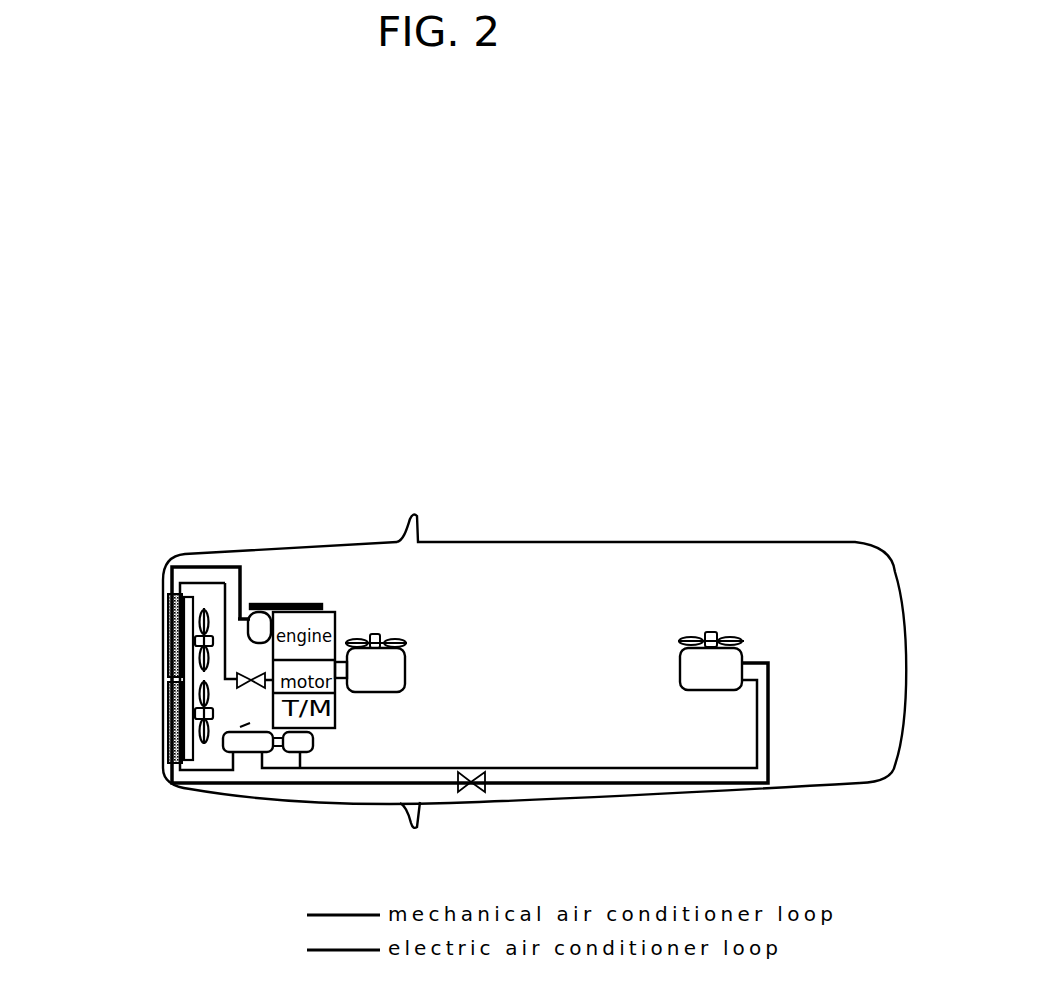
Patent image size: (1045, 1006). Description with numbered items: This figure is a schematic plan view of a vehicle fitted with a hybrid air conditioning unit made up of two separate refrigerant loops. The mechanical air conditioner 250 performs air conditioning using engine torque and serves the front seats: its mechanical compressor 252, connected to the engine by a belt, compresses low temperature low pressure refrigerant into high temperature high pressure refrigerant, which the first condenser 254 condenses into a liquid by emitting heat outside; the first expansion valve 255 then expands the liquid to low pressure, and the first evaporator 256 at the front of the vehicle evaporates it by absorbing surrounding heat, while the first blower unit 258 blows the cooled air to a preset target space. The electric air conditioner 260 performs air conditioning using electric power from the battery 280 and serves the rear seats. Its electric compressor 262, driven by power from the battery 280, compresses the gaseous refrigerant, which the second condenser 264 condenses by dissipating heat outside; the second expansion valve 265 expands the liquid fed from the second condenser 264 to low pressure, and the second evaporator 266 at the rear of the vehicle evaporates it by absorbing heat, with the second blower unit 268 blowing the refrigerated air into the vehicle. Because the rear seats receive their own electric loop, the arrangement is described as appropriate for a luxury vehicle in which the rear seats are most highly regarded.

The mechanical air conditioner 250 is at (192, 567).
The mechanical compressor 252 is at (250, 612).
The first condenser 254 is at (163, 655).
The first expansion valve 255 is at (237, 679).
The first evaporator 256 is at (362, 693).
The first blower unit 258 is at (360, 634).
The electric air conditioner 260 is at (195, 787).
The electric compressor 262 is at (246, 753).
The second condenser 264 is at (163, 704).
The second expansion valve 265 is at (470, 793).
The second evaporator 266 is at (712, 682).
The second blower unit 268 is at (731, 631).
The battery 280 is at (306, 753).